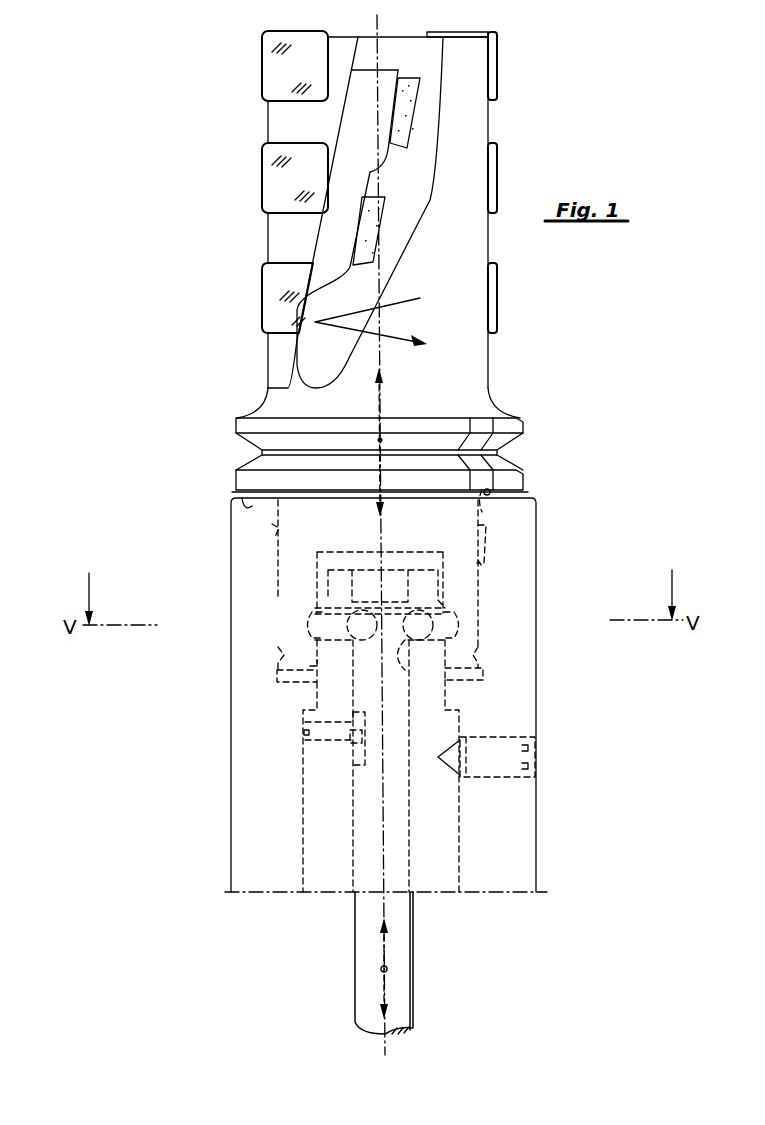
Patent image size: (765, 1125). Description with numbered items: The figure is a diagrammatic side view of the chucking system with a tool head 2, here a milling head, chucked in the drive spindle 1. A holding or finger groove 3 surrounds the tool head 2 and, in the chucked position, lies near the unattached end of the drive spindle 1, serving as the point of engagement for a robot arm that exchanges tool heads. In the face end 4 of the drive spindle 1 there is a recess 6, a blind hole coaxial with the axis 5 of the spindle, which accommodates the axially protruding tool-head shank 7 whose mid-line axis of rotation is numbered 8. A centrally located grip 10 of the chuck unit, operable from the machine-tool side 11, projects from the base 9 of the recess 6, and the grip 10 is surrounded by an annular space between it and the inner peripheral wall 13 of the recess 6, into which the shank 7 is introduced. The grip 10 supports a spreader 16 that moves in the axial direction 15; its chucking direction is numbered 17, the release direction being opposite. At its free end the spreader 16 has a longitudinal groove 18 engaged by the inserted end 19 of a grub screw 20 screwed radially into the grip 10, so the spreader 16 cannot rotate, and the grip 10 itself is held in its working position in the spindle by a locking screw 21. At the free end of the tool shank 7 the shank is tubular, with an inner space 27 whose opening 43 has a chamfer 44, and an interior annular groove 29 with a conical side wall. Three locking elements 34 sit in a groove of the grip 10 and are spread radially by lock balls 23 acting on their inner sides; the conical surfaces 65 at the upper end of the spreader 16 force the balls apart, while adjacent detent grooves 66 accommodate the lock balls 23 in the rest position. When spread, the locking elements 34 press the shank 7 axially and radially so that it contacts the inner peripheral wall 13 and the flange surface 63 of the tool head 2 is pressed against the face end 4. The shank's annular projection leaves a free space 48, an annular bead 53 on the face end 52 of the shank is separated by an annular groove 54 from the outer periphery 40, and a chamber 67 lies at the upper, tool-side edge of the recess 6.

The drive spindle 1 is at (526, 855).
The tool head 2 is at (484, 356).
The holding or finger groove 3 is at (516, 444).
The face end 4 is at (512, 488).
The axis 5 is at (383, 860).
The recess 6 is at (523, 524).
The inner peripheral wall 13 is at (483, 558).
The tool-head shank 7 is at (288, 578).
The axis of rotation 8 is at (379, 30).
The base 9 is at (470, 680).
The grip 10 is at (328, 576).
The machine-tool side 11 is at (524, 1001).
The axial direction 15 is at (382, 485).
The spreader 16 is at (400, 975).
The chucking system (locking direction) 17 is at (386, 989).
The longitudinal groove 18 is at (354, 759).
The inserted end 19 is at (352, 737).
The grub screw 20 is at (303, 738).
The locking screw 21 is at (536, 751).
The lock ball 23 is at (363, 642).
The inner space 27 is at (365, 560).
The interior annular groove 29 is at (308, 612).
The locking elements 34 is at (306, 622).
The outer periphery 40 is at (532, 536).
The opening 43 is at (445, 676).
The chamfer 44 is at (312, 668).
The free space 48 is at (270, 530).
The face end 52 is at (295, 675).
The annular bead 53 is at (283, 668).
The annular groove 54 is at (479, 657).
The flange surface 63 is at (246, 498).
The conical surfaces 65 is at (428, 576).
The detent grooves 66 is at (400, 660).
The chamber 67 is at (487, 489).